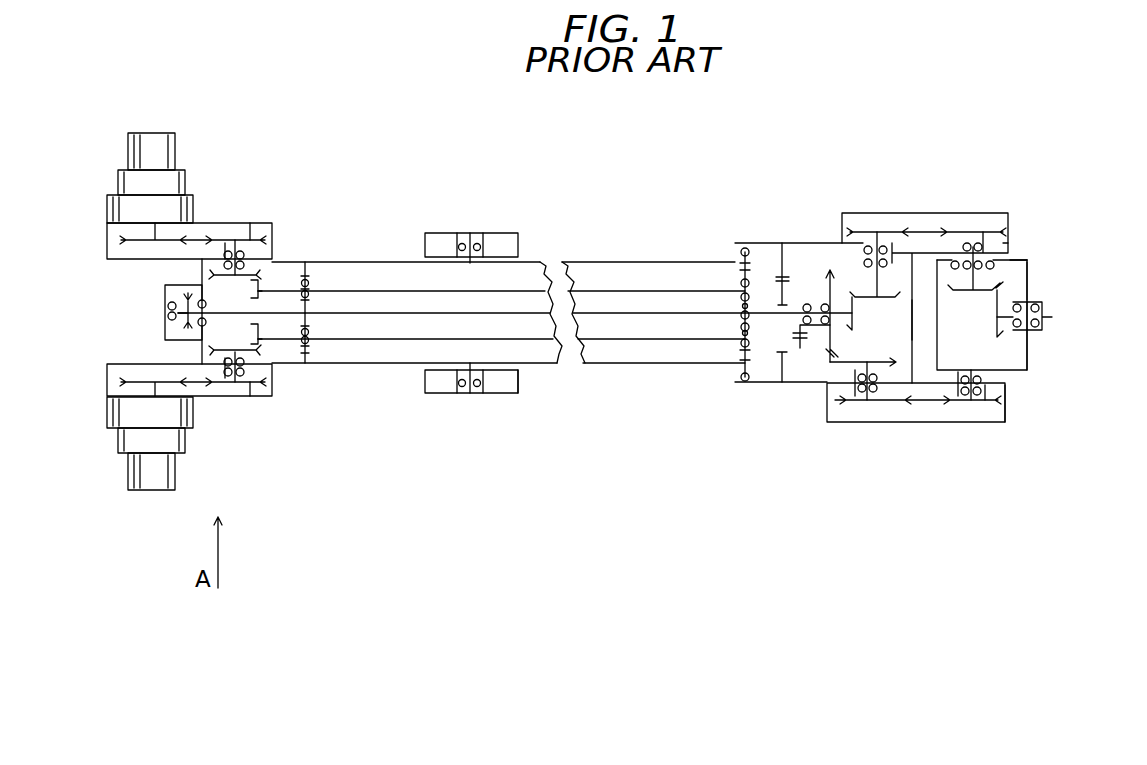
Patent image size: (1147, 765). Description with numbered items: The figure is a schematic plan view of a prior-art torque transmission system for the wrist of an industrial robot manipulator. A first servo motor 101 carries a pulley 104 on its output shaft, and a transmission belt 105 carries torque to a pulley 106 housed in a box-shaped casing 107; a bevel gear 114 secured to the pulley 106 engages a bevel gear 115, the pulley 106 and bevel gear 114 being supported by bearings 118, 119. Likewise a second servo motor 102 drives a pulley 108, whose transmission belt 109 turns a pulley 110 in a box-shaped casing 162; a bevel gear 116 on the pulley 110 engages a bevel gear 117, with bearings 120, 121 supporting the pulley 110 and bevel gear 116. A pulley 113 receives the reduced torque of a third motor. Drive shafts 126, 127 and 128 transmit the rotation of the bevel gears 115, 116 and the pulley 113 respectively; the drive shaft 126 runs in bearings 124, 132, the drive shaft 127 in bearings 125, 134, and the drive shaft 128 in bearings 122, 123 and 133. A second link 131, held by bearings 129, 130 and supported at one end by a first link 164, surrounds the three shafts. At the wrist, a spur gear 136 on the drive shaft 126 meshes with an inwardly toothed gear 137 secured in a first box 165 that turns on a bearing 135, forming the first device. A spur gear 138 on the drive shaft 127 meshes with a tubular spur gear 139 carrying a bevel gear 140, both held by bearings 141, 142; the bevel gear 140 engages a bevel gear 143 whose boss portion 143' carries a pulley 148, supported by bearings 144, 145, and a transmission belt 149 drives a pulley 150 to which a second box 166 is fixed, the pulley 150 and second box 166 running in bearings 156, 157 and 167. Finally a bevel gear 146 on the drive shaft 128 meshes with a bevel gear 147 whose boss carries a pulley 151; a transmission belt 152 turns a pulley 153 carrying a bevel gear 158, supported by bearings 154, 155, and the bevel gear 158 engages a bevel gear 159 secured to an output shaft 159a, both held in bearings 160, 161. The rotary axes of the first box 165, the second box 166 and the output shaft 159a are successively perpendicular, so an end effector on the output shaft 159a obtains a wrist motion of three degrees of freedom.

The first servo motor 101 is at (140, 200).
The second servo motor 102 is at (153, 417).
The pulley 104 is at (156, 240).
The transmission belt 105 is at (195, 240).
The pulley 106 is at (225, 258).
The box-shaped casing 107 is at (248, 223).
The pulley 108 is at (152, 372).
The transmission belt 109 is at (153, 383).
The pulley 110 is at (228, 397).
The pulley 113 is at (165, 330).
The bevel gear 114 is at (307, 282).
The bevel gear 115 is at (232, 280).
The bevel gear 116 is at (306, 345).
The bevel gear 117 is at (262, 348).
The bearing 118 is at (246, 262).
The bearing 119 is at (268, 268).
The bearing 120 is at (262, 352).
The bearing 121 is at (262, 360).
The bearing 122 is at (165, 318).
The bearing 123 is at (172, 306).
The bearing 124 is at (378, 262).
The bearing 125 is at (380, 357).
The drive shaft 126 is at (440, 290).
The drive shaft 127 is at (440, 340).
The drive shaft 128 is at (512, 313).
The bearing 129 is at (478, 245).
The bearing 130 is at (478, 386).
The second link 131 is at (603, 365).
The bearing 132 is at (742, 282).
The bearing 133 is at (742, 300).
The bearing 134 is at (742, 343).
The bearing 135 is at (740, 378).
The spur gear 136 is at (748, 262).
The inwardly toothed gear 137 is at (782, 272).
The spur gear 138 is at (782, 360).
The tubular spur gear 139 is at (807, 303).
The bevel gear 140 is at (808, 383).
The bearing 141 is at (824, 303).
The bearing 142 is at (830, 280).
The bevel gear 143 is at (848, 410).
The boss portion 143' is at (890, 341).
The bearing 144 is at (862, 402).
The bearing 145 is at (878, 402).
The bevel gear 146 is at (868, 248).
The bevel gear 147 is at (888, 290).
The pulley 148 is at (917, 402).
The transmission belt 149 is at (933, 402).
The pulley 150 is at (973, 402).
The pulley 151 is at (905, 232).
The transmission belt 152 is at (960, 243).
The pulley 153 is at (978, 243).
The bearing 154 is at (1000, 237).
The bearing 155 is at (1010, 245).
The bearing 156 is at (1007, 403).
The bearing 157 is at (990, 402).
The bevel gear 158 is at (1000, 290).
The bevel gear 159 is at (1048, 303).
The output shaft 159a is at (1043, 325).
The bearing 160 is at (1016, 332).
The bearing 161 is at (1033, 332).
The box-shaped casing 162 is at (258, 397).
The first link 164 is at (513, 395).
The first box 165 is at (745, 385).
The second box 166 is at (1030, 267).
The bearing 167 is at (1018, 259).